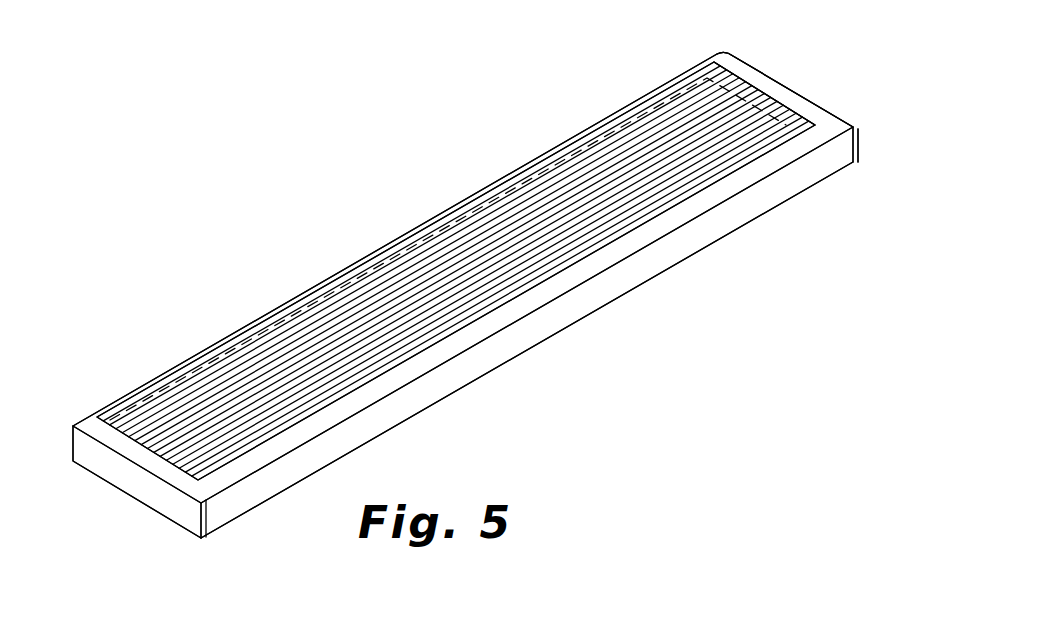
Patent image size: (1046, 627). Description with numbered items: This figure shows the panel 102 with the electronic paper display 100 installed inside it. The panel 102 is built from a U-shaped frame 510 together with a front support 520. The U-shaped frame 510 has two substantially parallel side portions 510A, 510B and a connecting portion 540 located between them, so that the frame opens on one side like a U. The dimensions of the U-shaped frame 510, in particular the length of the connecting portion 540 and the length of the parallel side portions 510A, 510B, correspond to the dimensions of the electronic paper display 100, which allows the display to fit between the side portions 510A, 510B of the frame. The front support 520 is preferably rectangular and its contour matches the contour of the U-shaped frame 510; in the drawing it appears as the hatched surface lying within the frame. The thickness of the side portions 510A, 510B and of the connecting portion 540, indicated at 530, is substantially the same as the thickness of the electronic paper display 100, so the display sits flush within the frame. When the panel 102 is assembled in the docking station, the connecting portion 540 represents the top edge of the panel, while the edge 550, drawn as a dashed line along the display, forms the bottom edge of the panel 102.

The electronic paper display 100 is at (222, 337).
The panel 102 is at (423, 147).
The U-shaped frame 510 is at (468, 388).
The side portion 510A is at (142, 488).
The side portion 510B is at (786, 95).
The front support 520 is at (625, 158).
The thickness 530 is at (703, 73).
The connecting portion 540 is at (703, 233).
The edge 550 is at (362, 257).